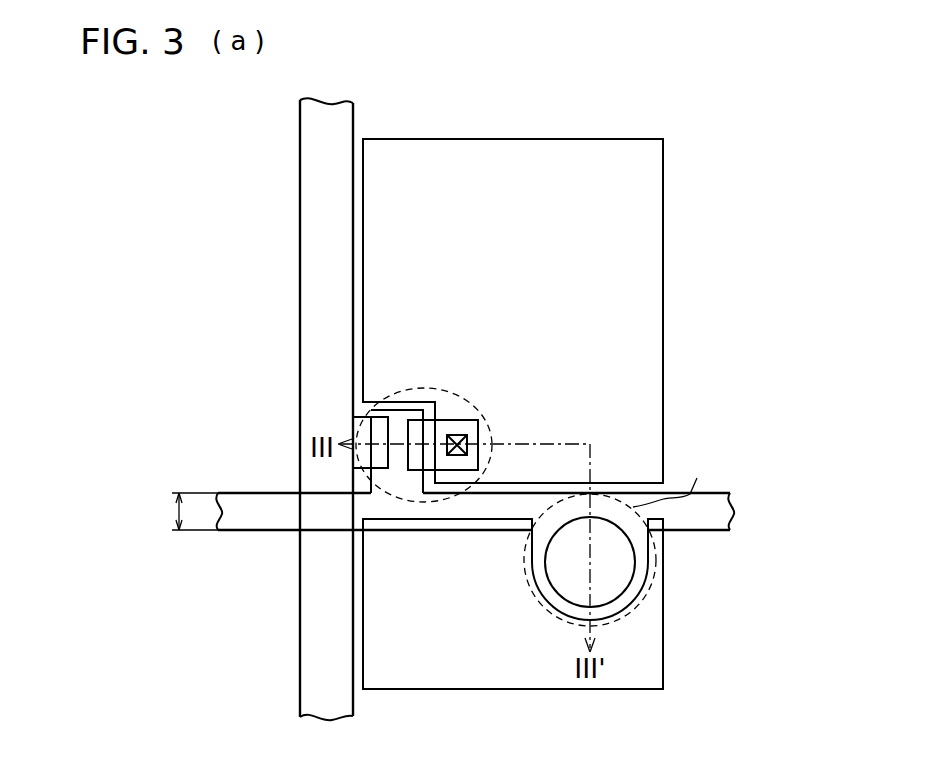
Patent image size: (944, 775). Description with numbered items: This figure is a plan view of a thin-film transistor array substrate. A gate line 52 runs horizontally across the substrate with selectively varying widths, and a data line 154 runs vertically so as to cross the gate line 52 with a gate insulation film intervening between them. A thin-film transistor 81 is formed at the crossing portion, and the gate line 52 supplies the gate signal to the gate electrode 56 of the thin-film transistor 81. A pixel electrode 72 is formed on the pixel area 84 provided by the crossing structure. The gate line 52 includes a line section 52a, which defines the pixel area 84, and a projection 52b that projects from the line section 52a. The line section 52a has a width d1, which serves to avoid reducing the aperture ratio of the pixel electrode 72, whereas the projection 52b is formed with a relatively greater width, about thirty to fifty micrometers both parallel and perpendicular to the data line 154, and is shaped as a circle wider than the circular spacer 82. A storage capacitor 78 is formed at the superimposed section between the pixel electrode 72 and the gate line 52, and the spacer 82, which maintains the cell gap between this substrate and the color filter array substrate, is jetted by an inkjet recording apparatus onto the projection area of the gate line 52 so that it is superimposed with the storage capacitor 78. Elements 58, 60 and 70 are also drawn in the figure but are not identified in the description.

The gate line 52 is at (718, 514).
The line section 52a is at (392, 520).
The projection 52b is at (612, 612).
The gate electrode 56 is at (400, 412).
The drain electrode 58 is at (379, 417).
The thin film transistor region 60 is at (457, 420).
The contact hole 70 is at (464, 440).
The pixel electrode 72 is at (663, 270).
The storage capacitor 78 is at (671, 479).
The thin-film transistor 81 is at (353, 427).
The spacer 82 is at (548, 600).
The pixel area 84 is at (362, 222).
The data line 154 is at (328, 700).
The width of line section d1 is at (180, 511).